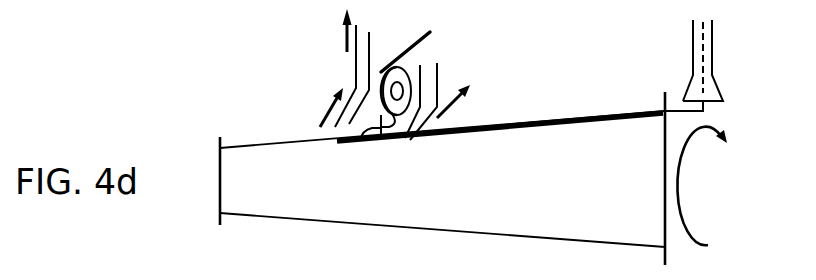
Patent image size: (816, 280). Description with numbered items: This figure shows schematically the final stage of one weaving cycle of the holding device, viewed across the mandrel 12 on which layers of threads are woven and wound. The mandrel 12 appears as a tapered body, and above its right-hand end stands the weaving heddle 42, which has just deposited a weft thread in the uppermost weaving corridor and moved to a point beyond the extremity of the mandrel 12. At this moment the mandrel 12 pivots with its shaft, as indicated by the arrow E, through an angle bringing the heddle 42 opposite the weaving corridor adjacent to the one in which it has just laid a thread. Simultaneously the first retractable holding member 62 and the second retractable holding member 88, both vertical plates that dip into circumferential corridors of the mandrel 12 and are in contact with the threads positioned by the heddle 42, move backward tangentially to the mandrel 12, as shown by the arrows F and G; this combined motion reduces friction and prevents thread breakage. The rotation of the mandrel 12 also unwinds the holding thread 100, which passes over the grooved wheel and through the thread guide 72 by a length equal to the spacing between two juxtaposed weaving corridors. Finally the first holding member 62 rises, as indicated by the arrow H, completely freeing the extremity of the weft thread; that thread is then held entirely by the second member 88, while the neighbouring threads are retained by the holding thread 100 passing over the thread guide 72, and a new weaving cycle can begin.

The mandrel 12 is at (578, 191).
The weaving heddle 42 is at (693, 58).
The first retractable holding member 62 is at (356, 62).
The thread guide 72 is at (362, 139).
The second retractable holding member 88 is at (437, 70).
The holding thread 100 is at (432, 33).
The arrow H is at (345, 32).
The arrow F is at (330, 110).
The arrow G is at (451, 101).
The arrow E is at (682, 152).